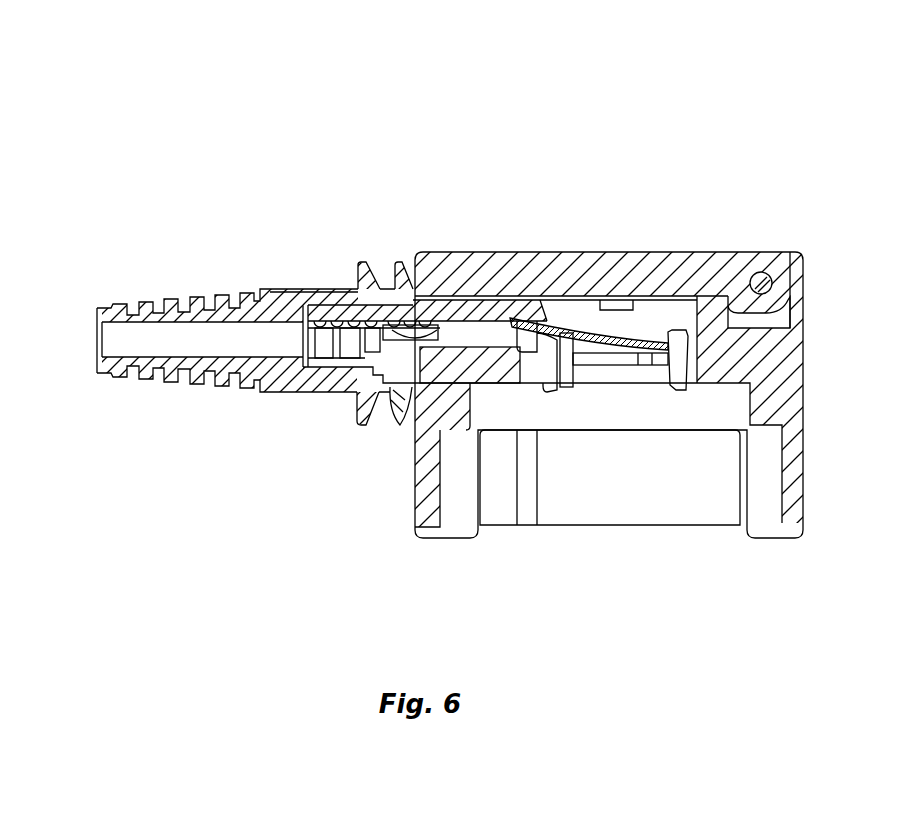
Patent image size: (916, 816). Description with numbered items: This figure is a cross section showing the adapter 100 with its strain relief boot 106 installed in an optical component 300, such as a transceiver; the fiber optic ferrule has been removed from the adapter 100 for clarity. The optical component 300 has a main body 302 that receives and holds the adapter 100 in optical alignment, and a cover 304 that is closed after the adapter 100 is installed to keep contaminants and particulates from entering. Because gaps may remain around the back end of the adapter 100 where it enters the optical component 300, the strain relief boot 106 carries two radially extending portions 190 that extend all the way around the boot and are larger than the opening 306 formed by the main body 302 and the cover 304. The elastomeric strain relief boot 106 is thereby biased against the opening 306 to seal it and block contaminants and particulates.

The optical component 300 is at (814, 162).
The strain relief boot 106 is at (216, 289).
The radially extending portion 190 is at (403, 260).
The adapter 100 is at (482, 254).
The cover 304 is at (641, 252).
The main body 302 is at (804, 496).
The opening 306 is at (391, 390).